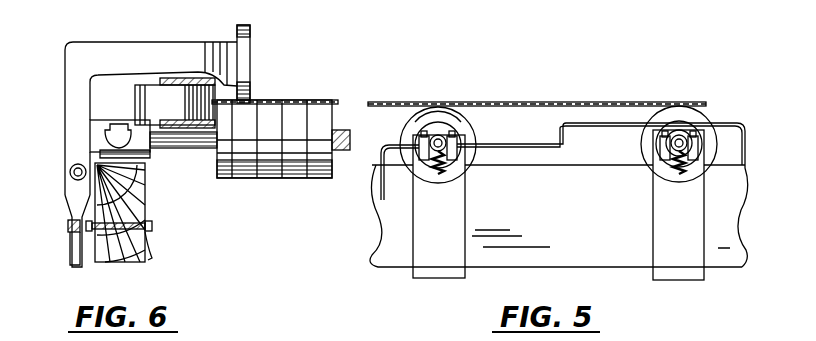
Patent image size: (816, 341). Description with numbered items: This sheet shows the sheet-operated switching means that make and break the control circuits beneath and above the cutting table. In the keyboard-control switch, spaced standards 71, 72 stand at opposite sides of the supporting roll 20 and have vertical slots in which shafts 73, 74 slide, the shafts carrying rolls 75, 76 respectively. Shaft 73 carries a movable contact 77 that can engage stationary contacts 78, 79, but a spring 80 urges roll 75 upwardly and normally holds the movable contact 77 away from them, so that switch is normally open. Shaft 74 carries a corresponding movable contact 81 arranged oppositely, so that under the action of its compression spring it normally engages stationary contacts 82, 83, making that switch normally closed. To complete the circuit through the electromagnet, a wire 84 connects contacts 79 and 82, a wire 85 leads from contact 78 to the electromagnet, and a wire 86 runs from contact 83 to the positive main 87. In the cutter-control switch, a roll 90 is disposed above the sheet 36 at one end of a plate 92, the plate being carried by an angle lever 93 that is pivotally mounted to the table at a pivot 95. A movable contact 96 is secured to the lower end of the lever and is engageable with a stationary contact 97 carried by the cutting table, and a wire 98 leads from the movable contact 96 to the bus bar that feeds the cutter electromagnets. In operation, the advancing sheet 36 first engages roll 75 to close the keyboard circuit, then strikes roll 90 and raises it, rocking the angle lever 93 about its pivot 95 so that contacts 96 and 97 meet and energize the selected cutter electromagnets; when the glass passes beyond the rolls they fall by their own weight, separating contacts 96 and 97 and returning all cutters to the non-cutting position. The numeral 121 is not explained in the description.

In FIG. 6, the supporting roll 20 is at (288, 180).
In FIG. 6, the sheet 36 is at (310, 102).
In FIG. 5, the sheet 36 is at (580, 82).
In FIG. 5, the standard 71 is at (443, 233).
In FIG. 5, the standard 72 is at (666, 262).
In FIG. 5, the shaft 73 is at (448, 136).
In FIG. 5, the shaft 74 is at (690, 124).
In FIG. 5, the roll 75 is at (420, 118).
In FIG. 5, the roll 76 is at (650, 108).
In FIG. 5, the movable contact 77 is at (440, 128).
In FIG. 5, the stationary contact 78 is at (419, 135).
In FIG. 5, the stationary contact 79 is at (458, 134).
In FIG. 5, the spring 80 is at (437, 172).
In FIG. 5, the movable contact 81 is at (668, 152).
In FIG. 5, the stationary contact 82 is at (679, 135).
In FIG. 5, the stationary contact 83 is at (702, 128).
In FIG. 5, the wire 84 is at (622, 126).
In FIG. 5, the wire 85 is at (376, 166).
In FIG. 5, the wire 86 is at (748, 110).
In FIG. 6, the positive main 87 is at (150, 258).
In FIG. 6, the roll 90 is at (246, 62).
In FIG. 6, the plate 92 is at (218, 55).
In FIG. 6, the angle lever 93 is at (85, 60).
In FIG. 6, the pivot 95 is at (70, 168).
In FIG. 6, the movable contact 96 is at (82, 232).
In FIG. 6, the stationary contact 97 is at (92, 232).
In FIG. 6, the wire 98 is at (70, 250).
In FIG. 6, the bearing collar 121 is at (168, 112).